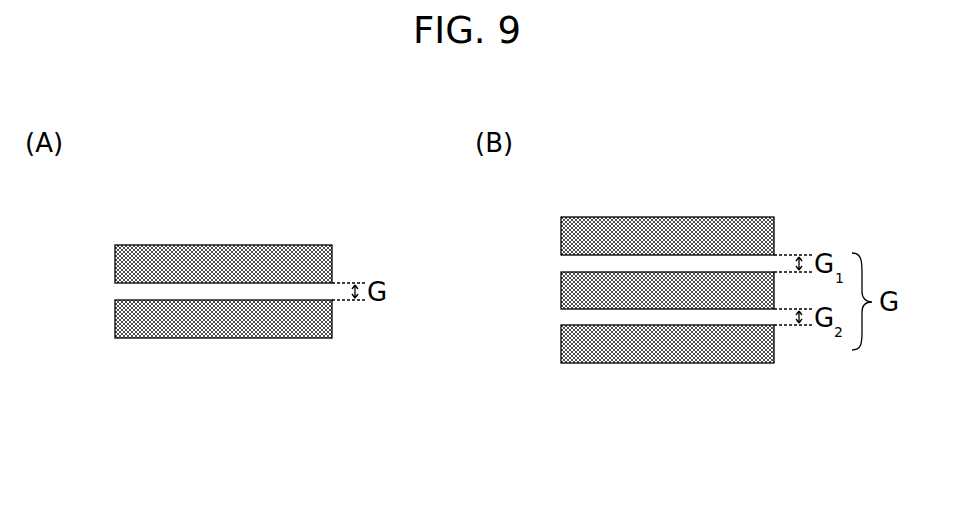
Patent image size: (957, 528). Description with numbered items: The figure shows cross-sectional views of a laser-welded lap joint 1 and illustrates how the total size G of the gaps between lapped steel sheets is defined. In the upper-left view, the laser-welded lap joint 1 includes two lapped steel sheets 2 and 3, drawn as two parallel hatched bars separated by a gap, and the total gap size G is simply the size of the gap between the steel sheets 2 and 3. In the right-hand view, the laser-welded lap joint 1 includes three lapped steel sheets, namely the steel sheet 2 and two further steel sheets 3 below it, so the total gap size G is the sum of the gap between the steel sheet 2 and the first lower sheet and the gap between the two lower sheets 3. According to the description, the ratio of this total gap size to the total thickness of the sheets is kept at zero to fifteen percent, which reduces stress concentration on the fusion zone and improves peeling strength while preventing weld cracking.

The laser-welded lap joint 1 is at (295, 199).
The steel sheet 2 is at (133, 264).
The steel sheet 3 is at (133, 318).